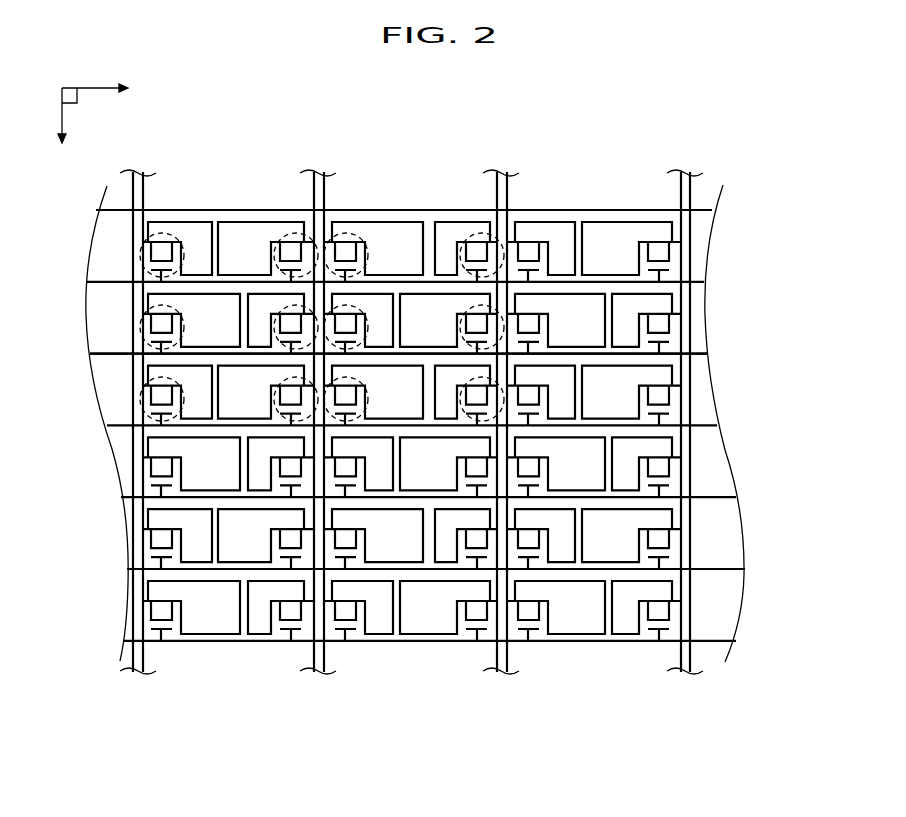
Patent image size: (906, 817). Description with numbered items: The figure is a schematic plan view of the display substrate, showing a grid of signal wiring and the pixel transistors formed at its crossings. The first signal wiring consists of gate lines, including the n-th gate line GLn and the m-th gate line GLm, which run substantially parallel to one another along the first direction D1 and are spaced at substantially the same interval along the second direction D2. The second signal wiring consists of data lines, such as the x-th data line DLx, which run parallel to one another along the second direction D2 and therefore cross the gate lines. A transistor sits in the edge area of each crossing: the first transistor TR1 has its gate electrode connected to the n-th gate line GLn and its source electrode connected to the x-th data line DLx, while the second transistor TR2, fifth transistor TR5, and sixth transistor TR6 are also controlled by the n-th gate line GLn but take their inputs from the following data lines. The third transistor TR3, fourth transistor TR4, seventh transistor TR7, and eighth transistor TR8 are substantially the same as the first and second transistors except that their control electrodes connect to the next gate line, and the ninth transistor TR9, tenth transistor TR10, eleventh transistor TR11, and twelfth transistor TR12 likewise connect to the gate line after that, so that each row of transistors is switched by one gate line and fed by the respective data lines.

The first direction D1 is at (110, 89).
The second direction D2 is at (63, 130).
The x-th data line DLx is at (140, 172).
The m-th gate line GLm is at (712, 210).
The n-th gate line GLn is at (704, 282).
The first transistor TR1 is at (163, 237).
The second transistor TR2 is at (294, 237).
The third transistor TR3 is at (142, 331).
The fourth transistor TR4 is at (296, 354).
The fifth transistor TR5 is at (345, 236).
The sixth transistor TR6 is at (478, 236).
The seventh transistor TR7 is at (348, 352).
The eighth transistor TR8 is at (472, 312).
The ninth transistor TR9 is at (142, 403).
The tenth transistor TR10 is at (296, 426).
The eleventh transistor TR11 is at (350, 423).
The twelfth transistor TR12 is at (478, 423).